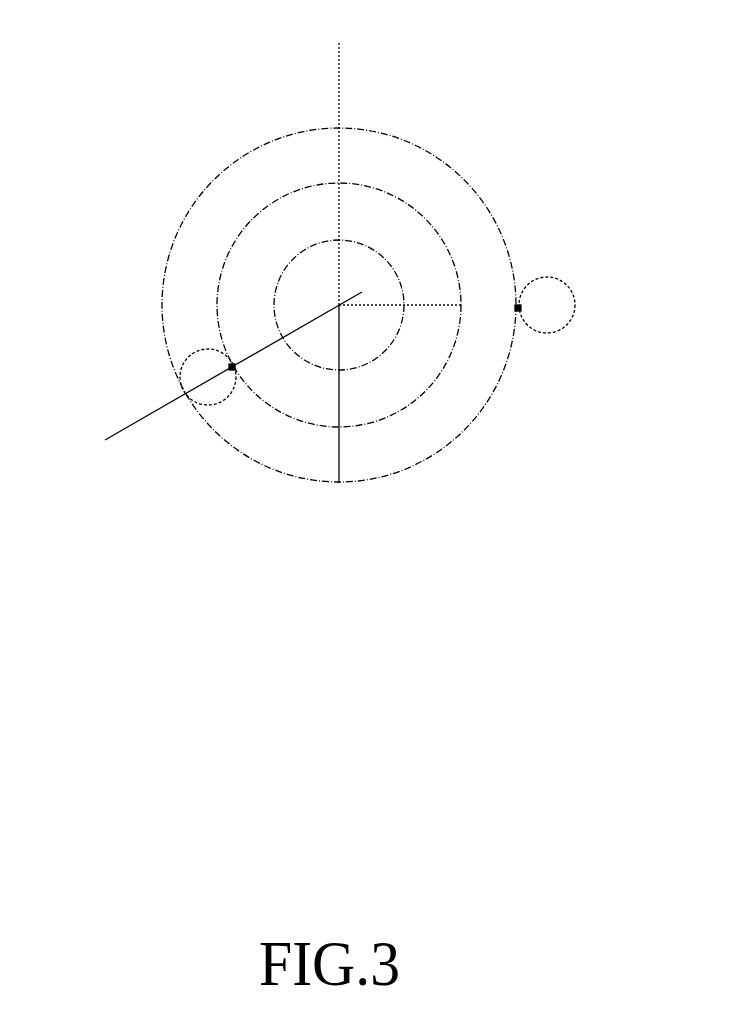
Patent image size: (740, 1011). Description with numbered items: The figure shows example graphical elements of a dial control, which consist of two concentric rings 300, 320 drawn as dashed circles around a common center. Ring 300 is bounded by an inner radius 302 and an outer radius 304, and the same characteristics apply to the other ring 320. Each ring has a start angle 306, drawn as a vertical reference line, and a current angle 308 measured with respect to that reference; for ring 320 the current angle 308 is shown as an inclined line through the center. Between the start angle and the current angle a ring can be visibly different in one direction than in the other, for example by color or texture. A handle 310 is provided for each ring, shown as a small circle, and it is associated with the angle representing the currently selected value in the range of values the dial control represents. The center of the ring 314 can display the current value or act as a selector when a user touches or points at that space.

The ring 300 is at (423, 183).
The inner radius 302 is at (418, 308).
The outer radius 304 is at (340, 460).
The start angle 306 is at (339, 43).
The current angle 308 is at (113, 428).
The handle 310 is at (217, 390).
The center of the ring 314 is at (433, 220).
The ring 320 is at (360, 215).